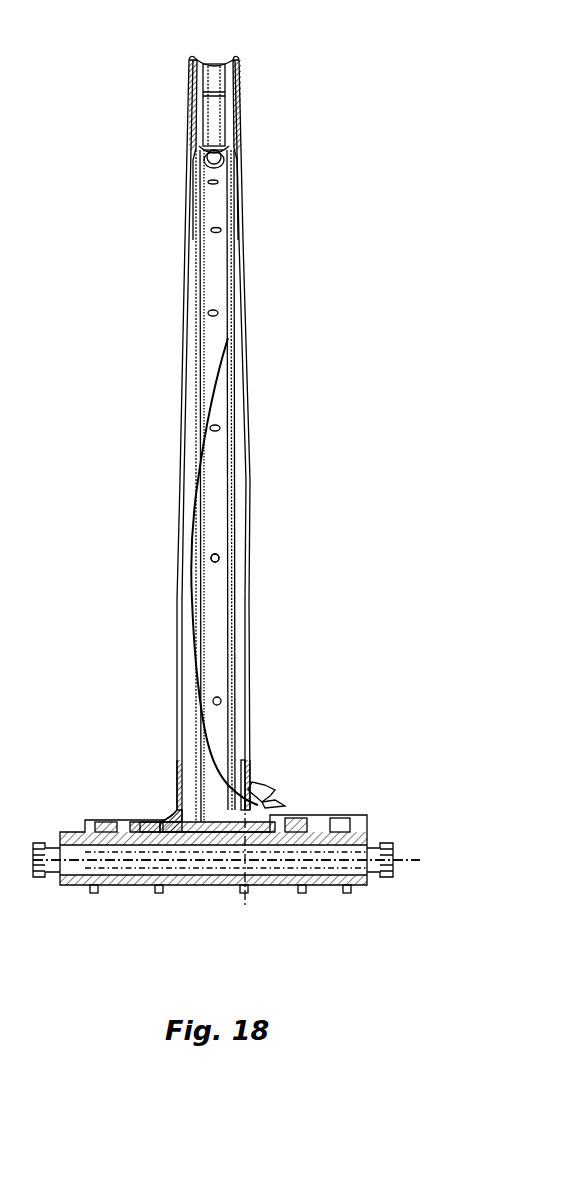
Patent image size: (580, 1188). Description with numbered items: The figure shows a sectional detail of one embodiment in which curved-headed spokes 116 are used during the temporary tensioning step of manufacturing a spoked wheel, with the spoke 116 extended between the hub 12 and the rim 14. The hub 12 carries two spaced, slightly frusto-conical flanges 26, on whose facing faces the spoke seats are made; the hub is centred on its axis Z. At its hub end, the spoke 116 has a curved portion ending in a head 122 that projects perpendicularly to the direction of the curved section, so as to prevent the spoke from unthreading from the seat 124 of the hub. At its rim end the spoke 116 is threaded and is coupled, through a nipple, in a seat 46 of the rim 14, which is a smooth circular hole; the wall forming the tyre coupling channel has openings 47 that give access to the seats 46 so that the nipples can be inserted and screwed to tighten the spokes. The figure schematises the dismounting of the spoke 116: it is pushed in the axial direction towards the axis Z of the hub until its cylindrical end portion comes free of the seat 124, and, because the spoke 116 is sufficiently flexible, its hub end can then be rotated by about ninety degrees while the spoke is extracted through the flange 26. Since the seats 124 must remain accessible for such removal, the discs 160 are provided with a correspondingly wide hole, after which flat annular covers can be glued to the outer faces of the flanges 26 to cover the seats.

The hub 12 is at (95, 803).
The rim 14 is at (178, 112).
The flanges 26 is at (180, 802).
The seat 46 is at (217, 162).
The openings 47 is at (214, 62).
The curved-headed spokes 116 is at (243, 730).
The head 122 is at (277, 798).
The seat 124 is at (257, 788).
The discs 160 is at (242, 428).
The axis Z is at (404, 808).